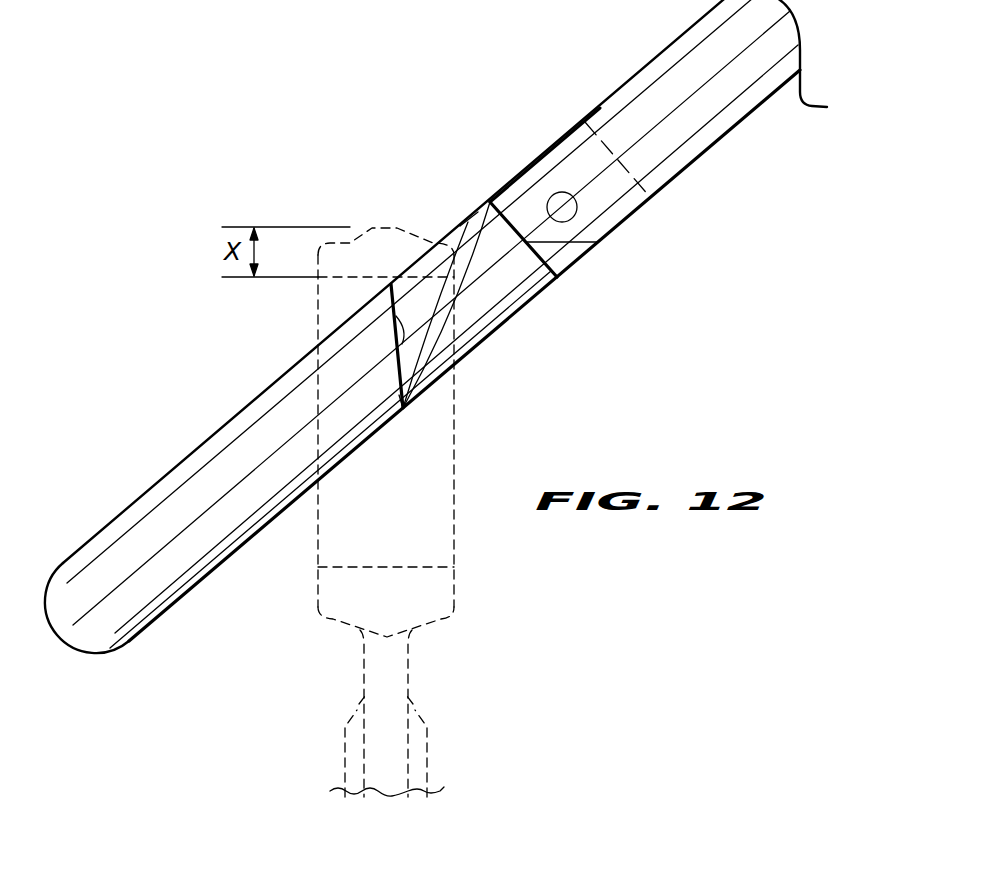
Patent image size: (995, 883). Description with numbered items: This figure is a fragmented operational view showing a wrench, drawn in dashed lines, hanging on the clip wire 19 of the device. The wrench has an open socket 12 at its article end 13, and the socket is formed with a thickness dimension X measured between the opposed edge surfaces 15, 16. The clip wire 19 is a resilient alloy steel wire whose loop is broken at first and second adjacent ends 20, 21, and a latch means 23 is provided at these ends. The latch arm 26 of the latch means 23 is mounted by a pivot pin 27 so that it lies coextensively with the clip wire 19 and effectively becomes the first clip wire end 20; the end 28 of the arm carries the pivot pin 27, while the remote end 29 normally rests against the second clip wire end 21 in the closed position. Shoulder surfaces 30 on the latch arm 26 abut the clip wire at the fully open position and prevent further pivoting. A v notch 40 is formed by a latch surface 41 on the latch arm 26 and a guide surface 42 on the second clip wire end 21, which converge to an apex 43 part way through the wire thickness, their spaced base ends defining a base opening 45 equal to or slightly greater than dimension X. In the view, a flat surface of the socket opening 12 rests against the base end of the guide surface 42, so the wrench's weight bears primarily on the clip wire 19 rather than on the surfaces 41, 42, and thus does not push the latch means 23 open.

The open socket 12 is at (425, 464).
The article end 13 is at (347, 237).
The edge surface 15 is at (318, 540).
The edge surface 16 is at (457, 548).
The clip wire 19 is at (190, 440).
The first clip wire end 20 is at (618, 190).
The second clip wire end 21 is at (362, 340).
The latch means 23 is at (490, 352).
The latch arm 26 is at (517, 300).
The pivot pin 27 is at (549, 195).
The end of the latch arm 28 is at (568, 253).
The remote end of the latch arm 29 is at (407, 382).
The shoulder surface 30 is at (547, 265).
The v notch 40 is at (469, 212).
The latch surface 41 is at (446, 302).
The guide surface 42 is at (393, 355).
The apex 43 is at (398, 388).
The base opening 45 is at (447, 230).